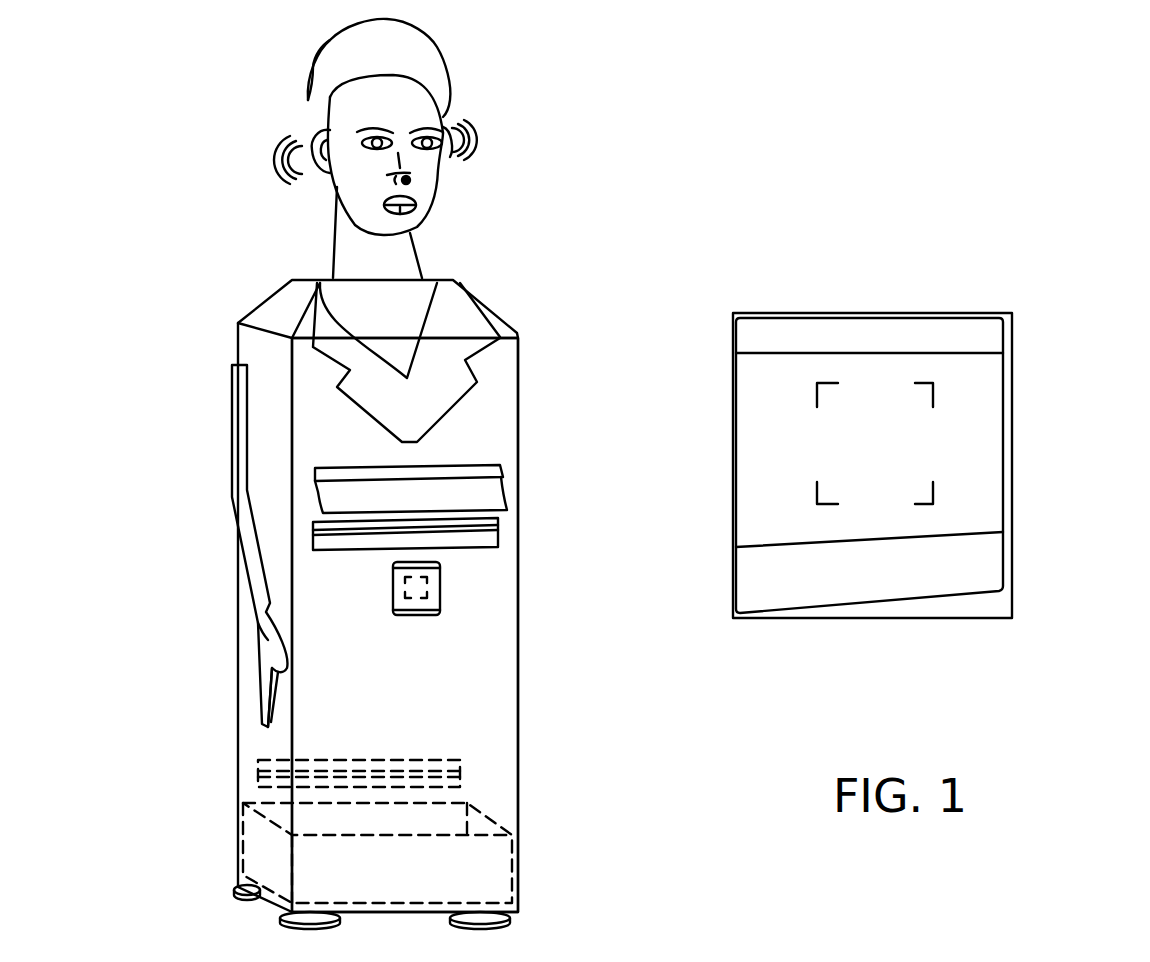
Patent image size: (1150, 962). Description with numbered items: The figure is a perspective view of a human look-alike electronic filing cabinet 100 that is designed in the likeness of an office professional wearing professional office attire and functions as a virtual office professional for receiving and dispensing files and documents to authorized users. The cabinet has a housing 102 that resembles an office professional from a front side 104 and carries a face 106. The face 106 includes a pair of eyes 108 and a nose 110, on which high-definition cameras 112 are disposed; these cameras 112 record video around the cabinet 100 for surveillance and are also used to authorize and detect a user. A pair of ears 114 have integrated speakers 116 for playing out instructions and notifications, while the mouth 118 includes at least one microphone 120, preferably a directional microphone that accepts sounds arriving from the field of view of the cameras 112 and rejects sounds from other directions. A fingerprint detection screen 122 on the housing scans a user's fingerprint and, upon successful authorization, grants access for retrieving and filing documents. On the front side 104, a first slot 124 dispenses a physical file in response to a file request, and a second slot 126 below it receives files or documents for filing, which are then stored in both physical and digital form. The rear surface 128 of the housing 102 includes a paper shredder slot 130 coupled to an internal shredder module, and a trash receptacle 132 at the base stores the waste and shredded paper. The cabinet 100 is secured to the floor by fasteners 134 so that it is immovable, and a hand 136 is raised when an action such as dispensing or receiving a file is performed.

The human look-alike electronic filing cabinet 100 is at (228, 283).
The housing 102 is at (205, 690).
The front side 104 is at (495, 673).
The face 106 is at (433, 170).
The pair of eyes 108 is at (373, 133).
The nose 110 is at (400, 163).
The high-definition cameras 112 is at (410, 178).
The pair of ears 114 is at (313, 153).
The speakers 116 is at (470, 147).
The mouth 118 is at (383, 210).
The microphone 120 is at (390, 220).
The fingerprint detection screen 122 is at (441, 585).
The first slot 124 is at (483, 472).
The second slot 126 is at (483, 535).
The rear surface 128 is at (247, 776).
The paper shredder slot 130 is at (342, 762).
The trash receptacle 132 is at (488, 848).
The fasteners 134 is at (499, 915).
The hand 136 is at (253, 545).